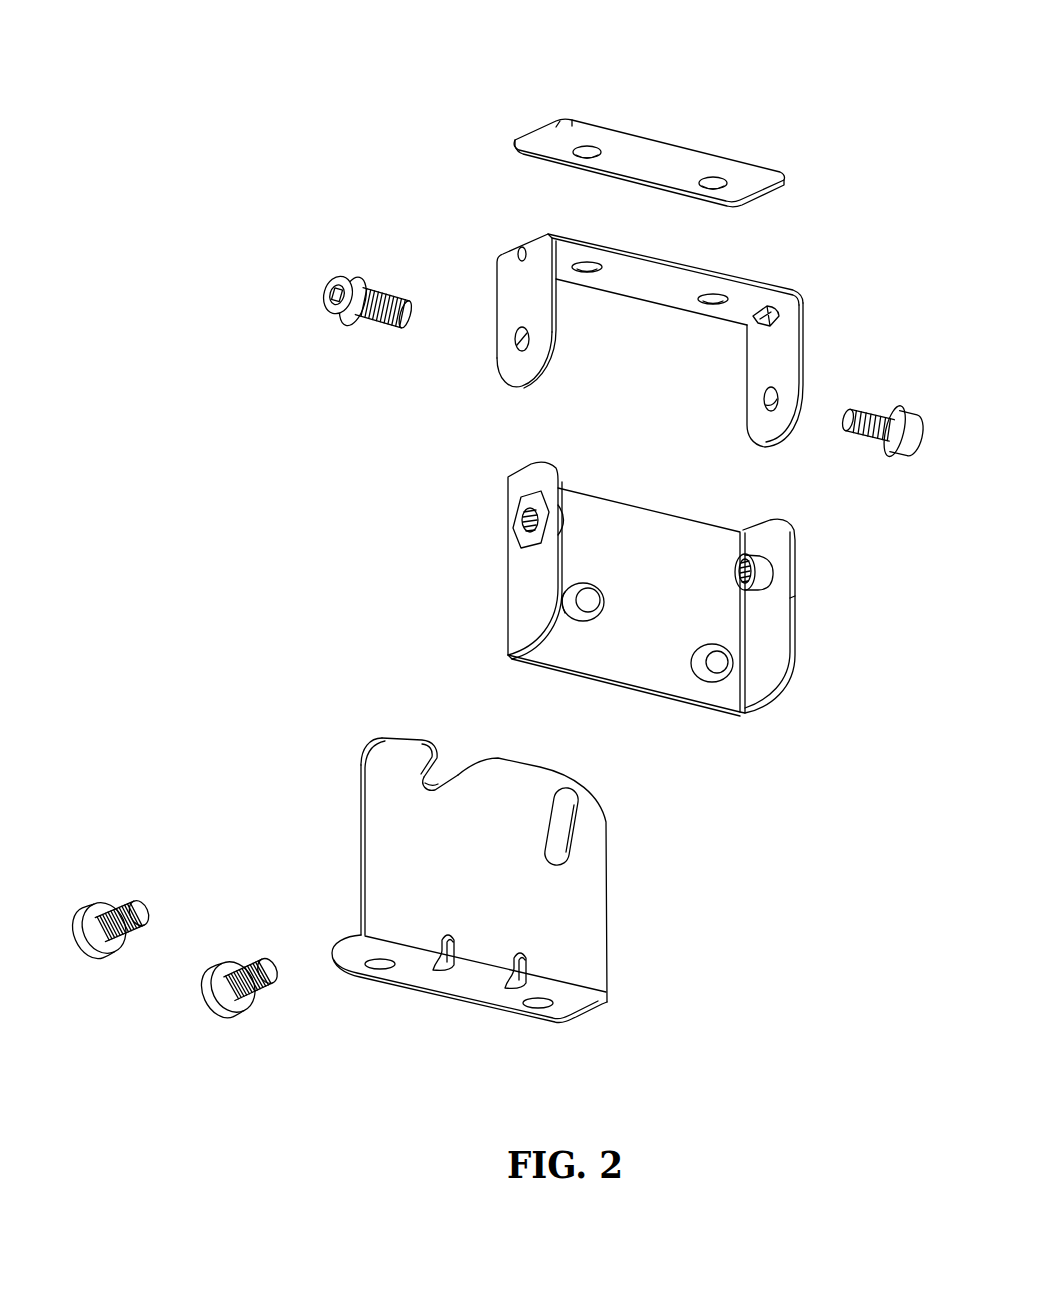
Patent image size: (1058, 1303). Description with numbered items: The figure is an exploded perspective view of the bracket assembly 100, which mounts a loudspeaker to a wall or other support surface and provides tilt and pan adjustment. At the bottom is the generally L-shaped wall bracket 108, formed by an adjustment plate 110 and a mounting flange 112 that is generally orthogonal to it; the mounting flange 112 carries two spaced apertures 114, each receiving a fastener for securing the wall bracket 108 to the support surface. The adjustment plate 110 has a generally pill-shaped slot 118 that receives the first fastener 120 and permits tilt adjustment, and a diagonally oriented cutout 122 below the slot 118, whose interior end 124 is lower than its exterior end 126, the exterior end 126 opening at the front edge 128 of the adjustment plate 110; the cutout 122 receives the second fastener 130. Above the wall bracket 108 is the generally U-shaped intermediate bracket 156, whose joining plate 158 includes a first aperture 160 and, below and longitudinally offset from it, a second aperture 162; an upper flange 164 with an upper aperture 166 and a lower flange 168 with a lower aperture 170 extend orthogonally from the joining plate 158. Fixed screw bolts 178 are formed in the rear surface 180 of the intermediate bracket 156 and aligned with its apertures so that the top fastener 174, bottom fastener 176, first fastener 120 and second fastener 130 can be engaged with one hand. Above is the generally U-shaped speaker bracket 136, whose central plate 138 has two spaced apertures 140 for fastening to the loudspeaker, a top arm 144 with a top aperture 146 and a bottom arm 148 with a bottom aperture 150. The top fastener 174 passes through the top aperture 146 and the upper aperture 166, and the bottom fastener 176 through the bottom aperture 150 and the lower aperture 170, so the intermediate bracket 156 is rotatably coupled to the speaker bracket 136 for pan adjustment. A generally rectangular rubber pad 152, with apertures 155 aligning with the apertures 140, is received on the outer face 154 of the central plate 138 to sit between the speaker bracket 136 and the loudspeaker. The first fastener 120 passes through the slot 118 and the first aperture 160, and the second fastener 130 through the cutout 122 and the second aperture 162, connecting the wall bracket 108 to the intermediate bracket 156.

The bracket assembly 100 is at (315, 73).
The wall bracket 108 is at (625, 923).
The adjustment plate 110 is at (380, 850).
The mounting flange 112 is at (455, 995).
The aperture 114 is at (378, 968).
The slot 118 is at (572, 826).
The first fastener 120 is at (245, 955).
The cutout 122 is at (442, 763).
The interior end 124 is at (366, 766).
The exterior end 126 is at (463, 762).
The front edge 128 is at (408, 737).
The second fastener 130 is at (105, 905).
The speaker bracket 136 is at (815, 309).
The central plate 138 is at (674, 277).
The aperture 140 is at (588, 274).
The top arm 144 is at (806, 362).
The top aperture 146 is at (775, 406).
The bottom arm 148 is at (515, 285).
The bottom aperture 150 is at (518, 350).
The pad 152 is at (665, 164).
The outer face 154 is at (660, 258).
The apertures 155 is at (591, 150).
The intermediate bracket 156 is at (803, 697).
The joining plate 158 is at (672, 683).
The first aperture 160 is at (723, 674).
The second aperture 162 is at (600, 628).
The upper flange 164 is at (797, 598).
The upper aperture 166 is at (762, 560).
The lower flange 168 is at (533, 588).
The lower aperture 170 is at (524, 514).
The top fastener 174 is at (897, 410).
The bottom fastener 176 is at (334, 272).
The fixed screw bolts 178 is at (740, 563).
The rear surface 180 is at (665, 609).